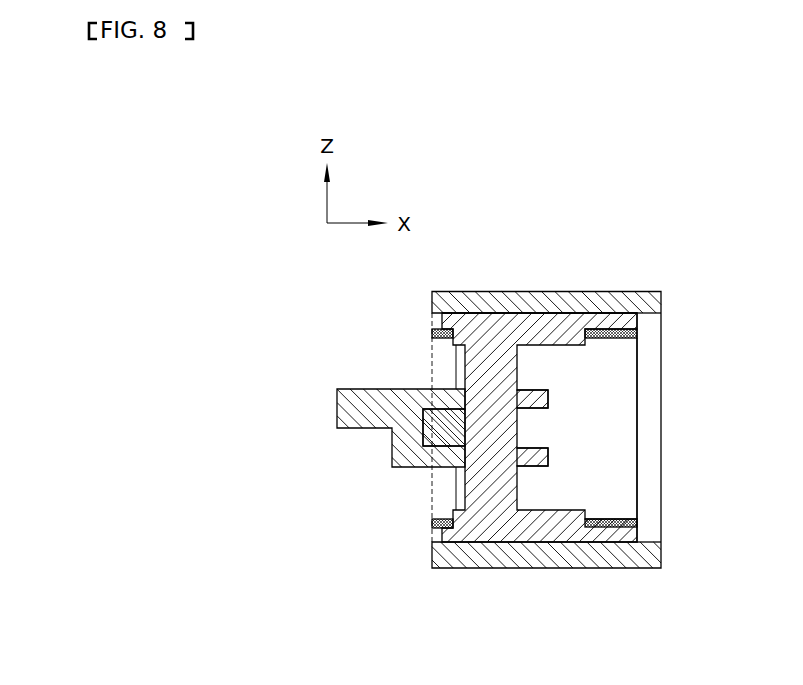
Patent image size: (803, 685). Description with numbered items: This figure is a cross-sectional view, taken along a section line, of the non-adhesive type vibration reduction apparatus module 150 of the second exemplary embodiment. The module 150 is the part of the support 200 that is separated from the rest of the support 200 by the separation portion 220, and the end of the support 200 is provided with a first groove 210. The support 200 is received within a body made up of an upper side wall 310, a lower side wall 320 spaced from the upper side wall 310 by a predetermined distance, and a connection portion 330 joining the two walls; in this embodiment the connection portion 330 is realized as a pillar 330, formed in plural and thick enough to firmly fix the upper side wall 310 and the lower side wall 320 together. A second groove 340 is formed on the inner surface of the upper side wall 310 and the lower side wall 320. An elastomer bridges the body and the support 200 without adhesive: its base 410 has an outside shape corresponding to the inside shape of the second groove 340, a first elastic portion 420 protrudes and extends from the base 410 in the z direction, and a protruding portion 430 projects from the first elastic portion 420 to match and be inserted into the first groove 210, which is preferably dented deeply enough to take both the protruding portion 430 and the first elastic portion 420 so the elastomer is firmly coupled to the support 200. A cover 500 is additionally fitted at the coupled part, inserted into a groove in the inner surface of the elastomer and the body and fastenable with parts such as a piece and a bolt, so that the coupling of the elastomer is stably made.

The module 150 is at (727, 184).
The support 200 is at (262, 460).
The first groove 210 is at (428, 436).
The separation portion 220 is at (340, 416).
The upper side wall 310 is at (492, 300).
The lower side wall 320 is at (568, 553).
The connection portion 330 is at (653, 403).
The second groove 340 is at (540, 300).
The base 410 is at (473, 530).
The first elastic portion 420 is at (516, 475).
The protruding portion 430 is at (442, 523).
The cover 500 is at (432, 333).